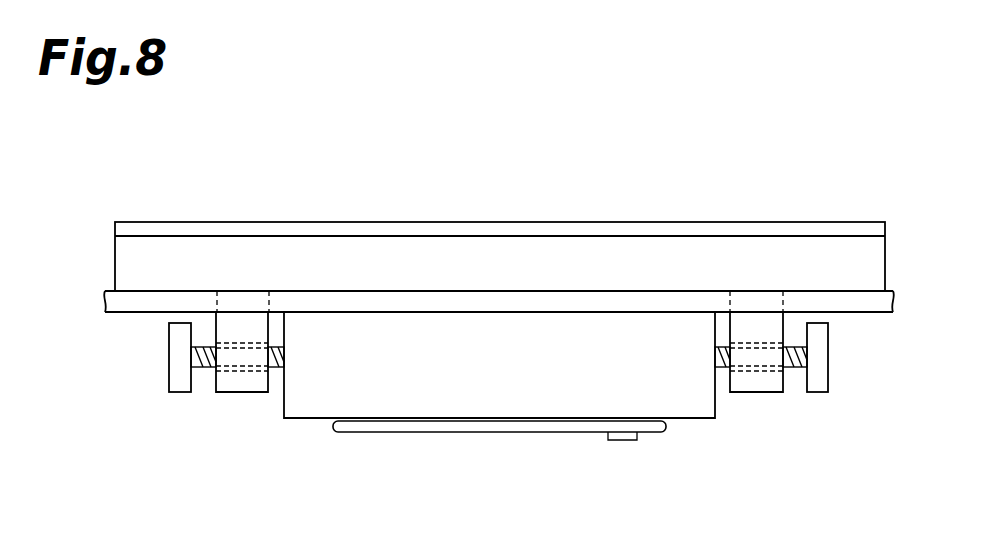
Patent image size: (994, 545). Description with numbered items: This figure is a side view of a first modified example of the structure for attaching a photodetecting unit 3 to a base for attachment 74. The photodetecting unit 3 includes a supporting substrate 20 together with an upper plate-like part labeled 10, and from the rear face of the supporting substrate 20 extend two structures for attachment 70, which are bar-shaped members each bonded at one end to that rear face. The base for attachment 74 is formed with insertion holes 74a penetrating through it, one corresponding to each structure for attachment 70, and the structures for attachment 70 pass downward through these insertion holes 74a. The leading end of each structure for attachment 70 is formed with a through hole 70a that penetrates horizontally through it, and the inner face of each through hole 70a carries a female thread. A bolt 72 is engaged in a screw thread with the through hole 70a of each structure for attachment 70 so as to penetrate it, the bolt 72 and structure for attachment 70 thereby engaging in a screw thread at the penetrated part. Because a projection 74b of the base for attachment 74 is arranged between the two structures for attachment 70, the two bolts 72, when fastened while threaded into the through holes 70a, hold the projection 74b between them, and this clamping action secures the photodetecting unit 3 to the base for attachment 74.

The photodetecting unit 3 is at (866, 127).
The display panel 10 is at (383, 230).
The supporting substrate 20 is at (688, 252).
The structure for attachment 70 is at (233, 385).
The through hole 70a is at (255, 372).
The bolt 72 is at (179, 385).
The base for attachment 74 is at (463, 352).
The insertion hole 74a is at (216, 295).
The projection 74b is at (533, 380).